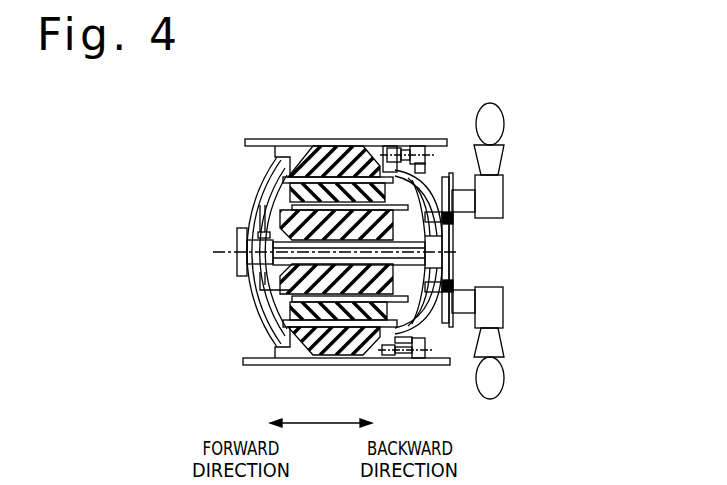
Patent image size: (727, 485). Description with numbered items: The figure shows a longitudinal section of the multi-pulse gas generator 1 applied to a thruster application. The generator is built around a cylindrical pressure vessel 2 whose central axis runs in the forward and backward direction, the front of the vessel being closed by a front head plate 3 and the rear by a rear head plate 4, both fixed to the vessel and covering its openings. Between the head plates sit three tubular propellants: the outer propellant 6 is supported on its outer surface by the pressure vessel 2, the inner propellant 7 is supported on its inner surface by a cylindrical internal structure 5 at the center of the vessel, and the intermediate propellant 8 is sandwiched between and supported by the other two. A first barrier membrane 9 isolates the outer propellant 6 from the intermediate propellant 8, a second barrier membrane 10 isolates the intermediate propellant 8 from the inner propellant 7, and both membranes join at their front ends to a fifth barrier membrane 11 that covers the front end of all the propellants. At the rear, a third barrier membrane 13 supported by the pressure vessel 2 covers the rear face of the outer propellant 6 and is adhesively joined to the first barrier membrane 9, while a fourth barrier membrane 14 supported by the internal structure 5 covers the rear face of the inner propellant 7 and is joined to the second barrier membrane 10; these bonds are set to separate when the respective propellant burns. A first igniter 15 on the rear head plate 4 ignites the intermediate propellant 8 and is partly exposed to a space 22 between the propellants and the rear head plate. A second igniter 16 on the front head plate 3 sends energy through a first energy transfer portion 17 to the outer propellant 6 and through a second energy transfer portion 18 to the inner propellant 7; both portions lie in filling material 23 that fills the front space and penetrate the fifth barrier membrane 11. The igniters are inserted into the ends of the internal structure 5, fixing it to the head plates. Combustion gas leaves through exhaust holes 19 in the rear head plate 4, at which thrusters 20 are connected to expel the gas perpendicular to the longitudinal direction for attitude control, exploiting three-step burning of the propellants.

The multi-pulse gas generator 1 is at (568, 118).
The pressure vessel 2 is at (285, 145).
The front head plate 3 is at (270, 173).
The rear head plate 4 is at (404, 153).
The internal structure 5 is at (452, 284).
The outer propellant 6 is at (362, 157).
The inner propellant 7 is at (425, 241).
The intermediate propellant 8 is at (413, 178).
The first barrier membrane 9 is at (311, 180).
The second barrier membrane 10 is at (338, 207).
The fifth barrier membrane 11 is at (282, 208).
The third barrier membrane 13 is at (383, 170).
The fourth barrier membrane 14 is at (402, 217).
The first igniter 15 is at (438, 263).
The second igniter 16 is at (252, 262).
The first energy transfer portion 17 is at (265, 185).
The second energy transfer portion 18 is at (262, 290).
The exhaust holes 19 is at (425, 340).
The thrusters 20 is at (505, 203).
The space 22 is at (395, 345).
The filling material 23 is at (250, 357).